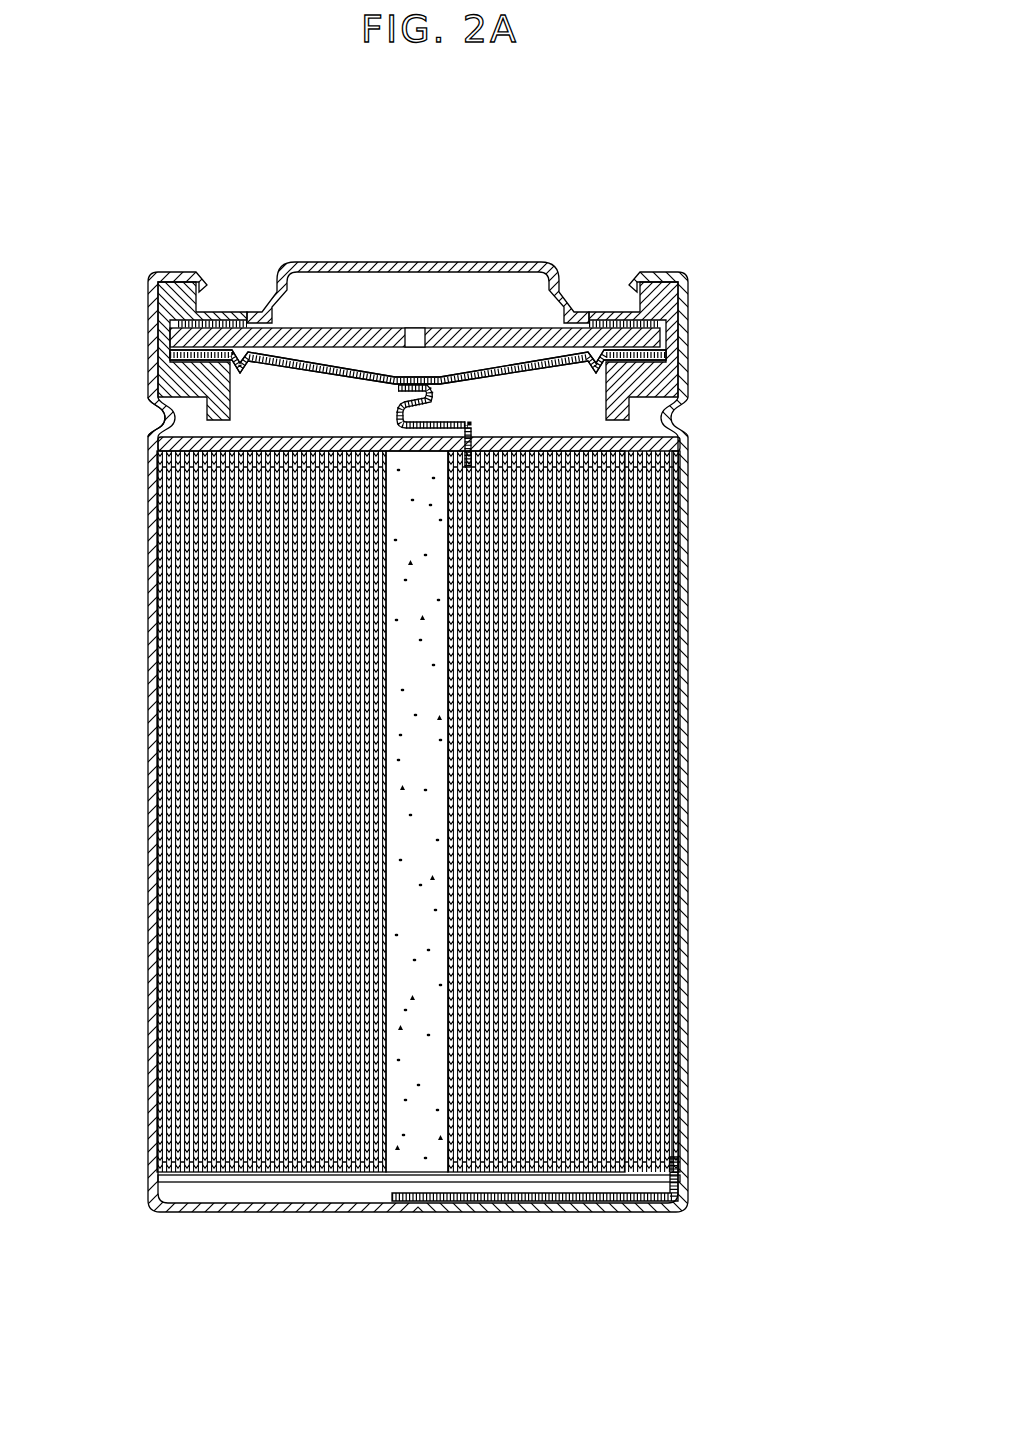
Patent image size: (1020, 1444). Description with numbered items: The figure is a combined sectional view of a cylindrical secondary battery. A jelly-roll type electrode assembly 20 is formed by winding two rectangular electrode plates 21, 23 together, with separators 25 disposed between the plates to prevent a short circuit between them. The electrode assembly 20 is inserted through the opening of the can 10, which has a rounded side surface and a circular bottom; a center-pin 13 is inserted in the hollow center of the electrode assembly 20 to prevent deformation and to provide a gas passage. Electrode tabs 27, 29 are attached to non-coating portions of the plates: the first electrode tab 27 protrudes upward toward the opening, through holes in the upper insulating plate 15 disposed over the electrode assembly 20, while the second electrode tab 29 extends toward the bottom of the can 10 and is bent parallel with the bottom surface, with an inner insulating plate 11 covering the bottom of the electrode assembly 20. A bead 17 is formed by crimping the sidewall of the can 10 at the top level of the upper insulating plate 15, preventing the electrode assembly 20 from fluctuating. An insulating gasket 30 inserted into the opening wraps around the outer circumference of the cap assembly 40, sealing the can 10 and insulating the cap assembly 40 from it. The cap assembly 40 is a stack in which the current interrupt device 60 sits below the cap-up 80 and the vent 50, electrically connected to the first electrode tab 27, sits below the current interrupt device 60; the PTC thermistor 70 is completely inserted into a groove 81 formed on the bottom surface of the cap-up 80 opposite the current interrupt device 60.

The can 10 is at (150, 552).
The inner insulating plate 11 is at (290, 1182).
The center-pin 13 is at (395, 612).
The upper insulating plate 15 is at (215, 434).
The bead 17 is at (160, 405).
The electrode assembly 20 is at (426, 808).
The electrode plate 21 is at (630, 633).
The electrode plate 23 is at (658, 560).
The separator 25 is at (665, 516).
The first electrode tab 27 is at (470, 427).
The second electrode tab 29 is at (604, 1206).
The insulating gasket 30 is at (429, 260).
The cap assembly 40 is at (418, 242).
The vent 50 is at (330, 355).
The current interrupt device 60 is at (462, 328).
The PTC thermistor 70 is at (610, 230).
The cap-up 80 is at (375, 263).
The groove 81 is at (230, 303).